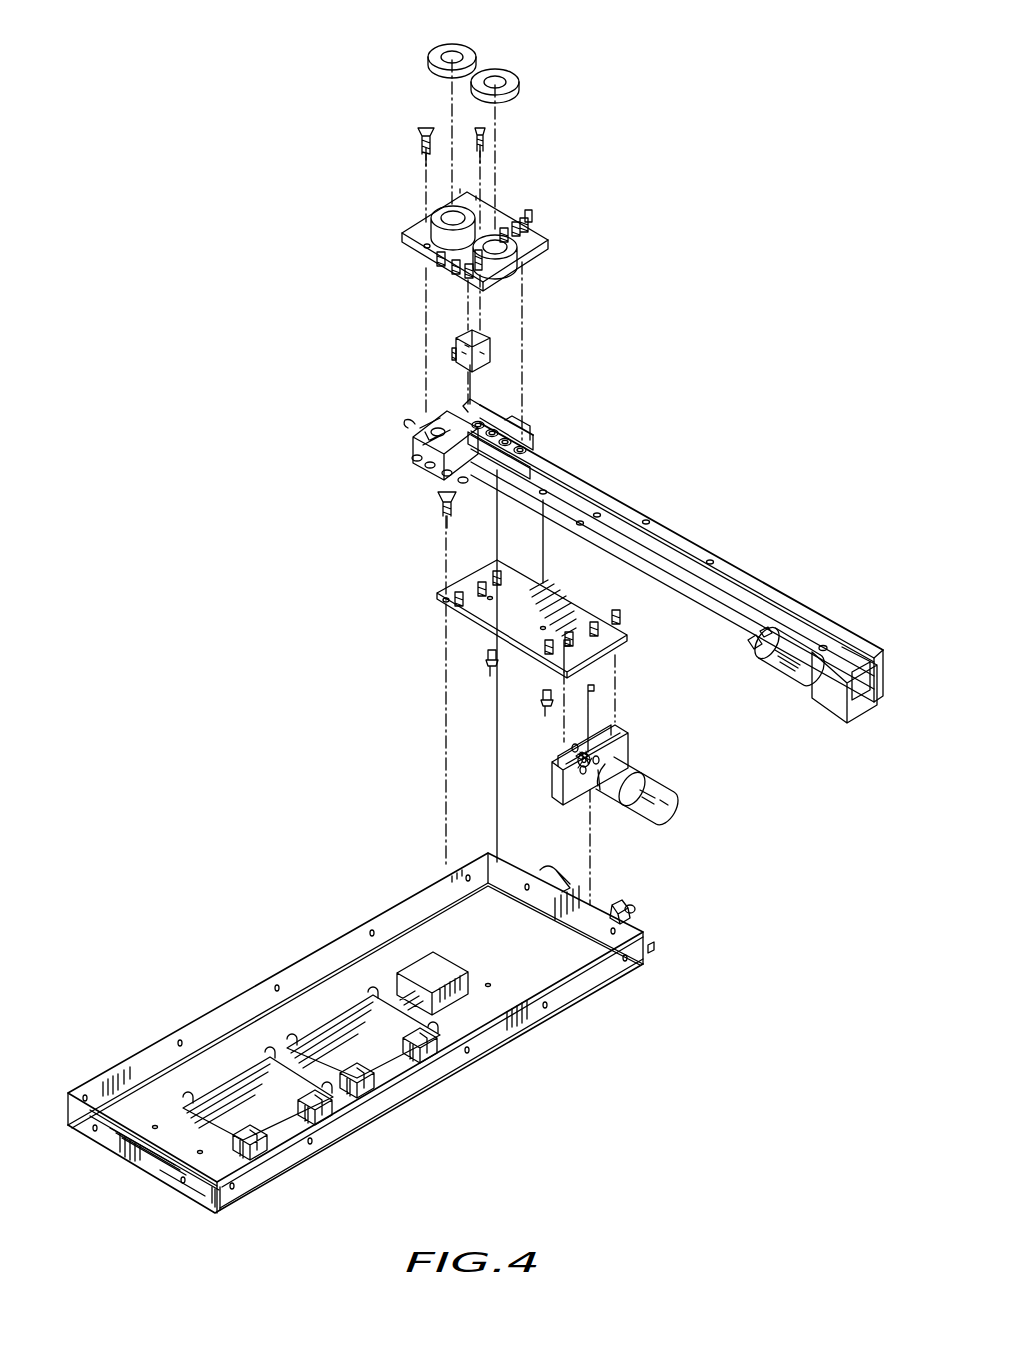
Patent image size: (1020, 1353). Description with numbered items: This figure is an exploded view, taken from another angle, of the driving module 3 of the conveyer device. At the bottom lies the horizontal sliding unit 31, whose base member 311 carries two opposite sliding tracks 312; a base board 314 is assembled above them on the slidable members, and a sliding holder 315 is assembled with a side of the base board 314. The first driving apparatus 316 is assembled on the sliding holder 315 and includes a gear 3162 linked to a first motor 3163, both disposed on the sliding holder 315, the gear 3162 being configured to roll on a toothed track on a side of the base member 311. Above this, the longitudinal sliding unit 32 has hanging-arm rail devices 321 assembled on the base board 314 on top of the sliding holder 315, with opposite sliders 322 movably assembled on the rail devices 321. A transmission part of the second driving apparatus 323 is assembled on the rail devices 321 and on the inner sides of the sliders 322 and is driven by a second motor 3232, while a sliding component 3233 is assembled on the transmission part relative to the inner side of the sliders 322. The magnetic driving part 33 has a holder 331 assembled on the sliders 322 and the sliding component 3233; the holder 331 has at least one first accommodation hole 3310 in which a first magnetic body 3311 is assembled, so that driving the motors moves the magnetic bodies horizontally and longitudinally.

The driving module 3 is at (301, 599).
The horizontal sliding unit 31 is at (395, 1047).
The base member 311 is at (151, 1163).
The sliding tracks 312 is at (635, 912).
The base board 314 is at (600, 637).
The sliding holder 315 is at (566, 790).
The first driving apparatus 316 is at (689, 795).
The gear 3162 is at (597, 758).
The first motor 3163 is at (652, 805).
The longitudinal sliding unit 32 is at (594, 551).
The hanging-arm rail devices 321 is at (648, 525).
The sliders 322 is at (418, 446).
The second driving apparatus 323 is at (803, 573).
The second motor 3232 is at (787, 648).
The sliding component 3233 is at (494, 348).
The magnetic driving part 33 is at (426, 228).
The holder 331 is at (408, 229).
The first accommodation hole 3310 is at (425, 245).
The first magnetic body 3311 is at (438, 46).